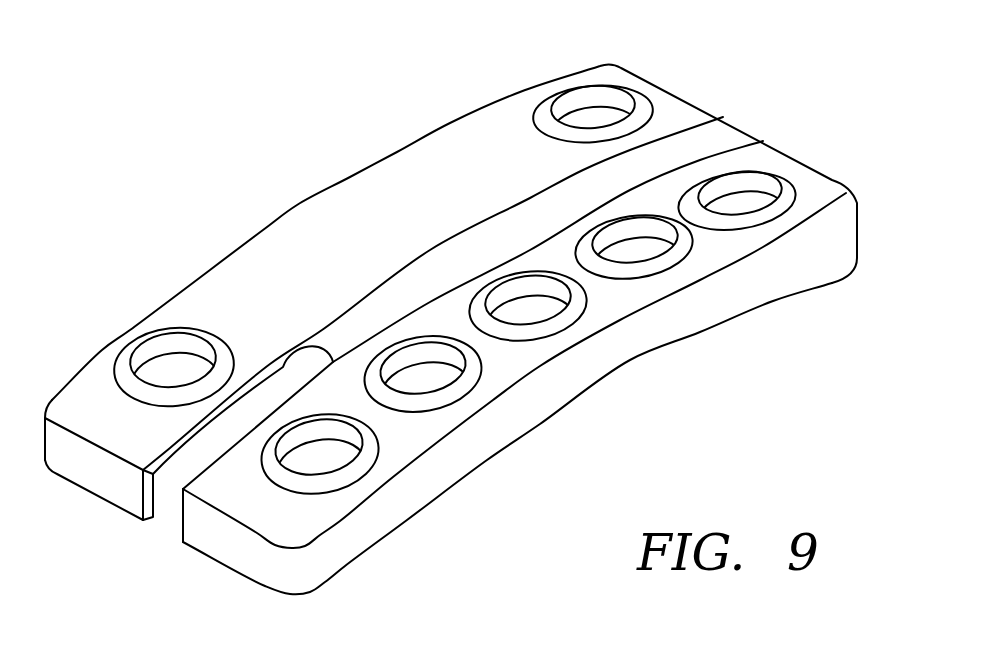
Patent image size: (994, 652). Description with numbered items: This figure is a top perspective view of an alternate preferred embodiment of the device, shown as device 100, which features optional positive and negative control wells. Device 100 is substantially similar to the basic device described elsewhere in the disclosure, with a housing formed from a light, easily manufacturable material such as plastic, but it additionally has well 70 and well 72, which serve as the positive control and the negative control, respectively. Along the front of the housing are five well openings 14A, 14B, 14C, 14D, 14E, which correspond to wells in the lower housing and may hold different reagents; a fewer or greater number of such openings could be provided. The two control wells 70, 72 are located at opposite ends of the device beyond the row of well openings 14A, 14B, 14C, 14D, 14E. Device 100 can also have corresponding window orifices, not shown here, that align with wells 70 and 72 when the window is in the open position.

The device 100 is at (718, 78).
The well 70 is at (117, 368).
The well 72 is at (540, 102).
The well opening 14A is at (365, 458).
The well opening 14B is at (467, 385).
The well opening 14C is at (567, 320).
The well opening 14D is at (673, 263).
The well opening 14E is at (787, 203).